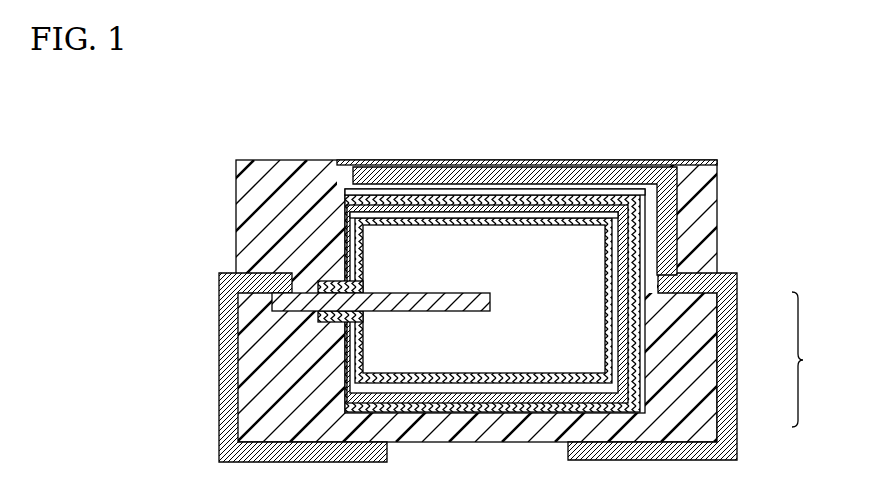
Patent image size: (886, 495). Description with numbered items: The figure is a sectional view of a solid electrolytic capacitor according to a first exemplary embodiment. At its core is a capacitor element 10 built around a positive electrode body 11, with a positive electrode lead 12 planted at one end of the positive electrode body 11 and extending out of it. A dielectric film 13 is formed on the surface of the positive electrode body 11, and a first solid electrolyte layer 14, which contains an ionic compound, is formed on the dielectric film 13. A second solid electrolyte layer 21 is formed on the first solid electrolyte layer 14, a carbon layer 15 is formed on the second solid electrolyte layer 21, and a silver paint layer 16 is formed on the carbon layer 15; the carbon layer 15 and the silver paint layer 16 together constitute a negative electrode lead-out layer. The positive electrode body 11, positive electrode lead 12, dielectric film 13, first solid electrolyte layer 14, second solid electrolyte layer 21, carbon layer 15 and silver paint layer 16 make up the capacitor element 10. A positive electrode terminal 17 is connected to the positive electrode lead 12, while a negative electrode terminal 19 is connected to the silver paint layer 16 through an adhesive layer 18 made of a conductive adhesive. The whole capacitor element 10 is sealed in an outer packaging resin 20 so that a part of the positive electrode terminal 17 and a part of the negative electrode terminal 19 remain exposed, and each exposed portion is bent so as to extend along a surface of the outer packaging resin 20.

The capacitor element 10 is at (815, 359).
The positive electrode body 11 is at (573, 299).
The positive electrode lead 12 is at (273, 313).
The dielectric film 13 is at (610, 318).
The first solid electrolyte layer 14 is at (618, 340).
The second solid electrolyte layer 21 is at (626, 360).
The carbon layer 15 is at (650, 375).
The silver paint layer 16 is at (642, 398).
The positive electrode terminal 17 is at (220, 345).
The adhesive layer 18 is at (567, 193).
The negative electrode terminal 19 is at (630, 192).
The outer packaging resin 20 is at (692, 192).